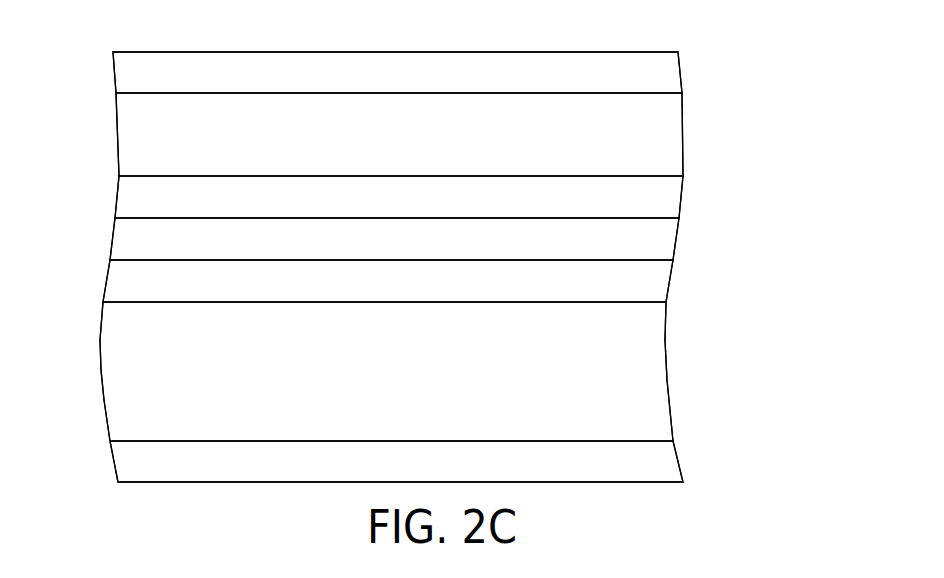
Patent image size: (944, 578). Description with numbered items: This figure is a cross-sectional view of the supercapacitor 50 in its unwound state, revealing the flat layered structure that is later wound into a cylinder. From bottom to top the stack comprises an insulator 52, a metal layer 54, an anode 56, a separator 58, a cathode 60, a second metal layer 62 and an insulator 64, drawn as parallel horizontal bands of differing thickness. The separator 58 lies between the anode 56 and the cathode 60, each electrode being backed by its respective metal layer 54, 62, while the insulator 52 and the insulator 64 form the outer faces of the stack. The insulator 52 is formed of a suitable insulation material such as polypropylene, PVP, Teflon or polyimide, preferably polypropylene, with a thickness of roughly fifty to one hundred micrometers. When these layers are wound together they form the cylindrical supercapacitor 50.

The supercapacitor 50 is at (737, 48).
The insulator 52 is at (650, 461).
The metal layer 54 is at (630, 385).
The anode 56 is at (638, 278).
The separator 58 is at (648, 242).
The cathode 60 is at (659, 194).
The metal layer 62 is at (657, 130).
The insulator 64 is at (133, 75).